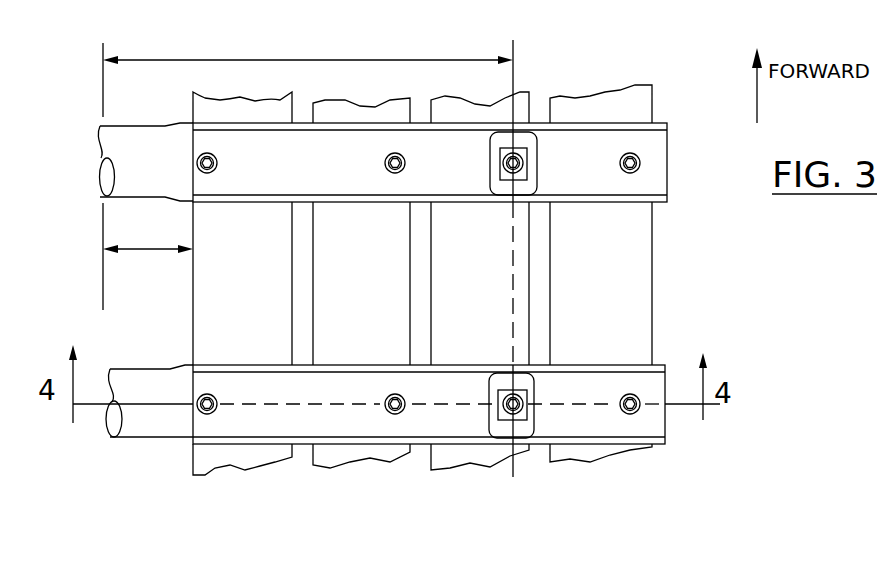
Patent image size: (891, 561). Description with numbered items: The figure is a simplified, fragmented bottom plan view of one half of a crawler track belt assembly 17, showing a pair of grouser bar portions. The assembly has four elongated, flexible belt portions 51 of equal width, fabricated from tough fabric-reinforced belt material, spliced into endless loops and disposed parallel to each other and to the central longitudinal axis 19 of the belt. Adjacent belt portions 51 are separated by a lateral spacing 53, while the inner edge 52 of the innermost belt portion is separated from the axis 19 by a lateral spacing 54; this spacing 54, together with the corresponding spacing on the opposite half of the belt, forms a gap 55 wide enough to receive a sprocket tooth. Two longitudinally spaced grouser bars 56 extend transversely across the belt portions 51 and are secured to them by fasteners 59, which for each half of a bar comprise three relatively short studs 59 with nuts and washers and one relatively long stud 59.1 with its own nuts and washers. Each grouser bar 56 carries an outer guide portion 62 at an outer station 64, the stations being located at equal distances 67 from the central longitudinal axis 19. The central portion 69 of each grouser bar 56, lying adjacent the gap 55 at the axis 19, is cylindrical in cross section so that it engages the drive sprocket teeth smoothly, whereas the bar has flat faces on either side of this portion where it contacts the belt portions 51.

The crawler track belt assembly 17 is at (700, 233).
The central longitudinal axis 19 is at (103, 285).
The belt portions 51 is at (338, 97).
The inner edge 52 is at (192, 334).
The lateral spacing 53 is at (258, 257).
The lateral spacing 54 is at (141, 249).
The gap 55 is at (170, 282).
The grouser bars 56 is at (455, 188).
The fasteners 59 is at (218, 163).
The long stud 59.1 is at (523, 398).
The outer guide portion 62 is at (490, 145).
The outer station 64 is at (516, 264).
The distance 67 is at (130, 62).
The central portion 69 is at (148, 420).